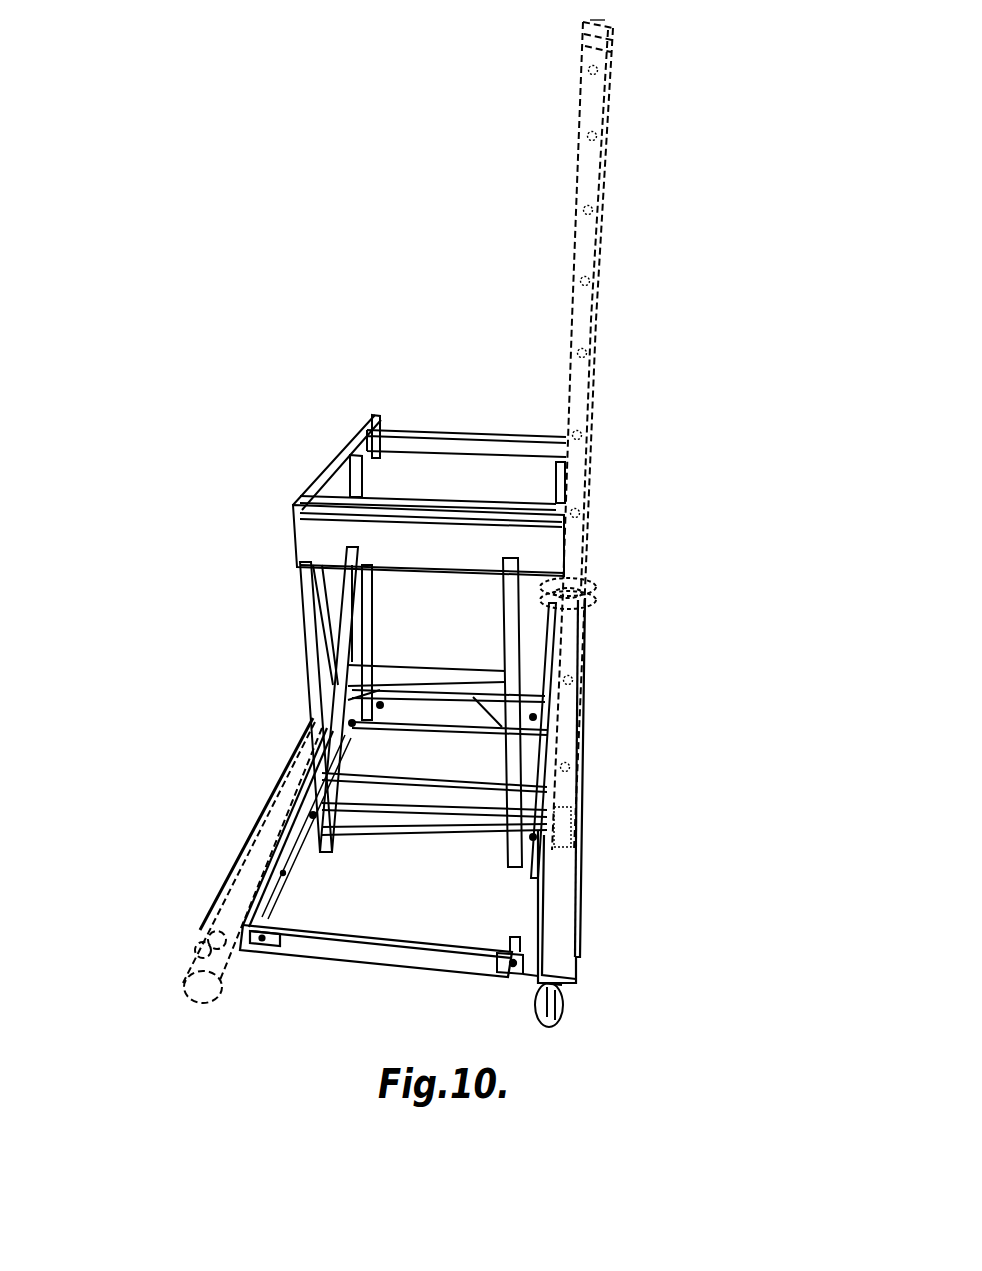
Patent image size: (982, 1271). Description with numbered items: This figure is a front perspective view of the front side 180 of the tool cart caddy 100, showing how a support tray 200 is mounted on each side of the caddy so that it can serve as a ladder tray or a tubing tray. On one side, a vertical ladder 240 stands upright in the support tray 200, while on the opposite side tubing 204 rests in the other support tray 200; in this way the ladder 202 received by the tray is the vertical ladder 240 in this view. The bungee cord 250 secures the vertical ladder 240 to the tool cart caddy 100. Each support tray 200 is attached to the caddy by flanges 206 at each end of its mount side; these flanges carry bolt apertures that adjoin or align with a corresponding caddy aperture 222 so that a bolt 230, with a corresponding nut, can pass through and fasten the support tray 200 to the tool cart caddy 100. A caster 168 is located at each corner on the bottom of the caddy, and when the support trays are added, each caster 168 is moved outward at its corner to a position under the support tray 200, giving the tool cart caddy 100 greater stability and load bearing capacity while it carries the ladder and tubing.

The tool cart caddy 100 is at (302, 329).
The caster 168 is at (562, 1006).
The front side 180 is at (245, 504).
The support tray 200 is at (193, 856).
The ladder 202 is at (597, 300).
The tubing 204 is at (194, 950).
The flange 206 is at (497, 968).
The caddy aperture 222 is at (285, 876).
The bolt 230 is at (510, 947).
The vertical ladder 240 is at (673, 202).
The bungee cord 250 is at (592, 582).